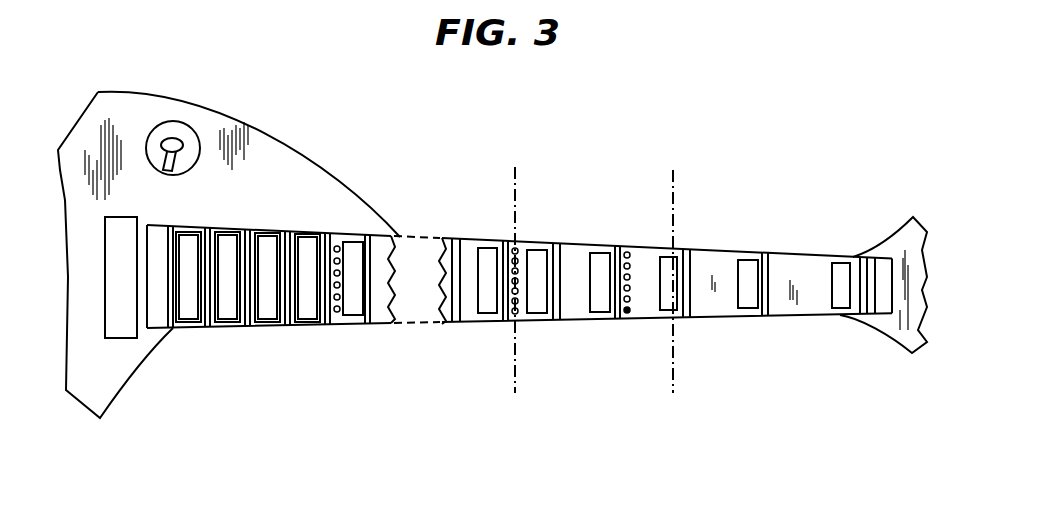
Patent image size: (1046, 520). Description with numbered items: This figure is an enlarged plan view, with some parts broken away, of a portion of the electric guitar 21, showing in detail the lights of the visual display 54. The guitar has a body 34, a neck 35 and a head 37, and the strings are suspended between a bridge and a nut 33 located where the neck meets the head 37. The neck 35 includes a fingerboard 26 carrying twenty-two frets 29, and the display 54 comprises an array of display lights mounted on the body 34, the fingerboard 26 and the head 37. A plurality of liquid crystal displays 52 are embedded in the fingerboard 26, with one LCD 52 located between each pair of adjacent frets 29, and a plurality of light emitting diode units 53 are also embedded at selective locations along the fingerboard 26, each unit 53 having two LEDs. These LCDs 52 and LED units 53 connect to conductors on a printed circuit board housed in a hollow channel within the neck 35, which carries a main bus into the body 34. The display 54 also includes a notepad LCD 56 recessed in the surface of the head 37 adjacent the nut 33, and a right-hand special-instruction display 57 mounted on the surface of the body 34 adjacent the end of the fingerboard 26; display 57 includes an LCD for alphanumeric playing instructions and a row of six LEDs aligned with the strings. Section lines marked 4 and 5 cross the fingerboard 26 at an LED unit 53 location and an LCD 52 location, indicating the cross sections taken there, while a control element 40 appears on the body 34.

The electric guitar 21 is at (506, 126).
The fingerboard 26 is at (157, 233).
The frets 29 is at (207, 232).
The nut 33 is at (860, 263).
The body 34 is at (310, 160).
The neck 35 is at (465, 238).
The head 37 is at (902, 237).
The switch 40 is at (188, 137).
The liquid crystal displays 52 is at (230, 313).
The light emitting diode units 53 is at (338, 311).
The visual display 54 is at (448, 349).
The notepad LCD 56 is at (885, 303).
The special-instruction display 57 is at (122, 330).
The section line 4- 4 is at (648, 393).
The section line 5- 5 is at (492, 393).